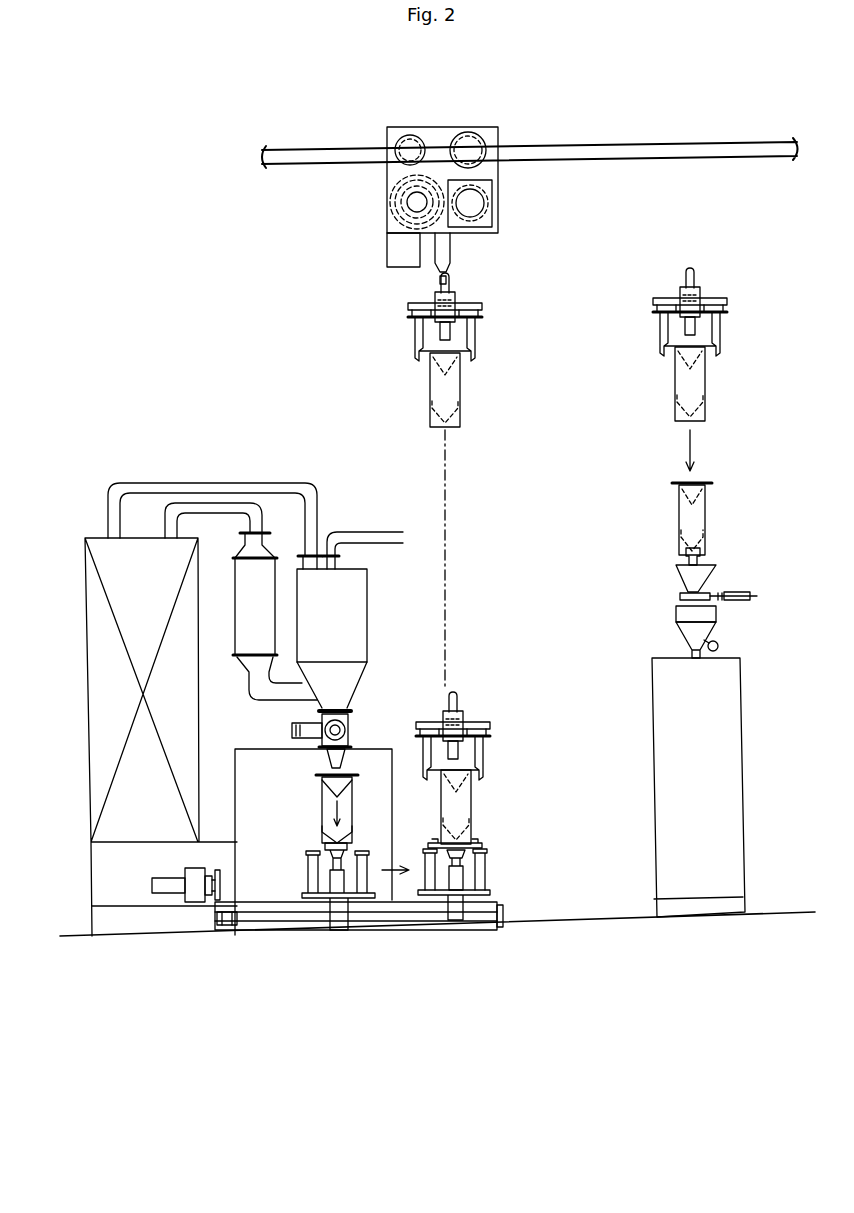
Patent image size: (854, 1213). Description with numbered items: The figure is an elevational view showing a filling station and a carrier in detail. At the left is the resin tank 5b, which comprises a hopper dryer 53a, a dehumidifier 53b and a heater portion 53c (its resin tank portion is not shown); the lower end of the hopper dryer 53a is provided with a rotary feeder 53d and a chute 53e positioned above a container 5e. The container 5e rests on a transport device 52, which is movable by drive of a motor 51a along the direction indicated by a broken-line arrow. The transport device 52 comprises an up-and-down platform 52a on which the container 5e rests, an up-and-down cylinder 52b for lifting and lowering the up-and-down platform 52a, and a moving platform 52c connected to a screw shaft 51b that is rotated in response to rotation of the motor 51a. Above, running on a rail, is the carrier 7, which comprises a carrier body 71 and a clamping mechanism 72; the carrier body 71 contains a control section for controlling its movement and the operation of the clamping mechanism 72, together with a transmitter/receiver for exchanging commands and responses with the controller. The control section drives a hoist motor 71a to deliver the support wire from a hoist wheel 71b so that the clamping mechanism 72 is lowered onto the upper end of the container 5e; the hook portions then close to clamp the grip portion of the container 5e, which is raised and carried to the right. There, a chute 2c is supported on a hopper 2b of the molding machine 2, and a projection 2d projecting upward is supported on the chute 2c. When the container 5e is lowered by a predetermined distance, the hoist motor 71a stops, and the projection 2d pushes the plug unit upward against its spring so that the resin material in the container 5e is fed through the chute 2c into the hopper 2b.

The molding machine 2 is at (745, 765).
The hopper 2b is at (712, 625).
The chute 2c is at (714, 576).
The projection 2d is at (700, 550).
The resin tank 5b is at (356, 621).
The container 5e is at (460, 386).
The carrier 7 is at (498, 137).
The carrier body 71 is at (387, 135).
The hoist motor 71a is at (495, 190).
The hoist wheel 71b is at (392, 190).
The clamping mechanism 72 is at (408, 340).
The motor 51a is at (194, 903).
The screw shaft 51b is at (385, 922).
The transport device 52 is at (471, 853).
The up-and-down platform 52a is at (482, 846).
The up-and-down cylinder 52b is at (462, 870).
The moving platform 52c is at (490, 893).
The hopper dryer 53a is at (363, 580).
The dehumidifier 53b is at (95, 692).
The heater portion 53c is at (252, 684).
The rotary feeder 53d is at (352, 724).
The chute 53e is at (322, 762).